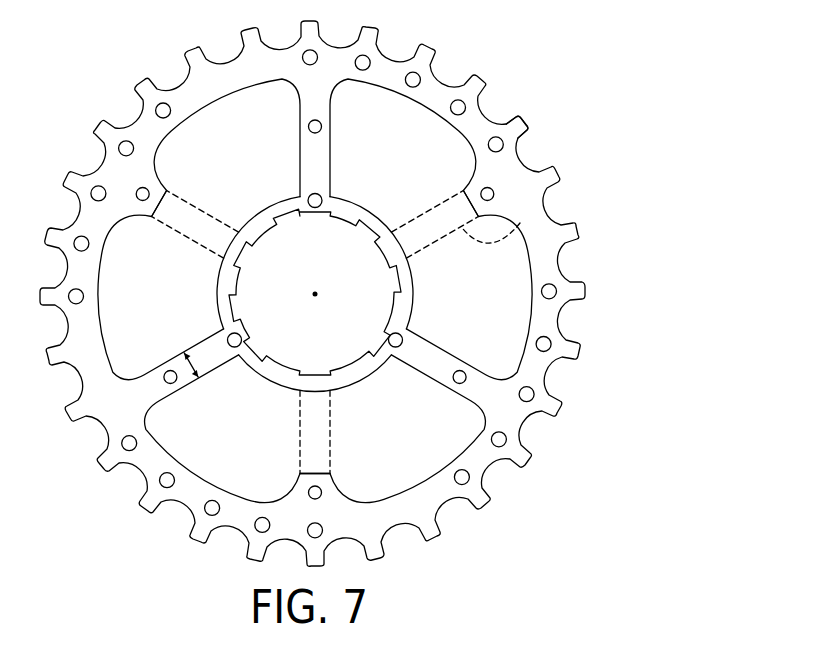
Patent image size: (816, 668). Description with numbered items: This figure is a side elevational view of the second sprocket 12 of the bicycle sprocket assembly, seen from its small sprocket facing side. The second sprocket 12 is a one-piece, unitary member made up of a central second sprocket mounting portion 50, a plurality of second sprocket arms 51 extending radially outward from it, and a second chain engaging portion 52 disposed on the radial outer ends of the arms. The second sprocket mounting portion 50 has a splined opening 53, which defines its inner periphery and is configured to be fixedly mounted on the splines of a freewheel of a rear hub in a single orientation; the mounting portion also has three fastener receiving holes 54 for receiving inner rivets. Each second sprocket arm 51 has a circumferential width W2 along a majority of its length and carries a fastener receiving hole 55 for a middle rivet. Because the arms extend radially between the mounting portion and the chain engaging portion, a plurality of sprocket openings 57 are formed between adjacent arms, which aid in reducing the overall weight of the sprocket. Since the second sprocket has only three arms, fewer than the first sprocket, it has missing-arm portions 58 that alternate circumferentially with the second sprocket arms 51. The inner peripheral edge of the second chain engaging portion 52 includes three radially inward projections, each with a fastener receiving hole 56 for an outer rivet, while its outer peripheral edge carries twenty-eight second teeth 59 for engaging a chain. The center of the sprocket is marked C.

The second sprocket 12 is at (122, 119).
The second sprocket mounting portion 50 is at (353, 207).
The second sprocket arms 51 is at (303, 103).
The second chain engaging portion 52 is at (433, 93).
The splined opening 53 is at (400, 281).
The fastener receiving holes 54 is at (311, 192).
The fastener receiving hole 55 is at (320, 125).
The fastener receiving holes 56 is at (143, 193).
The sprocket openings 57 is at (537, 297).
The missing-arm portions 58 is at (520, 223).
The second teeth 59 is at (527, 114).
The rotational center C is at (313, 294).
The circumferential width W2 is at (201, 361).